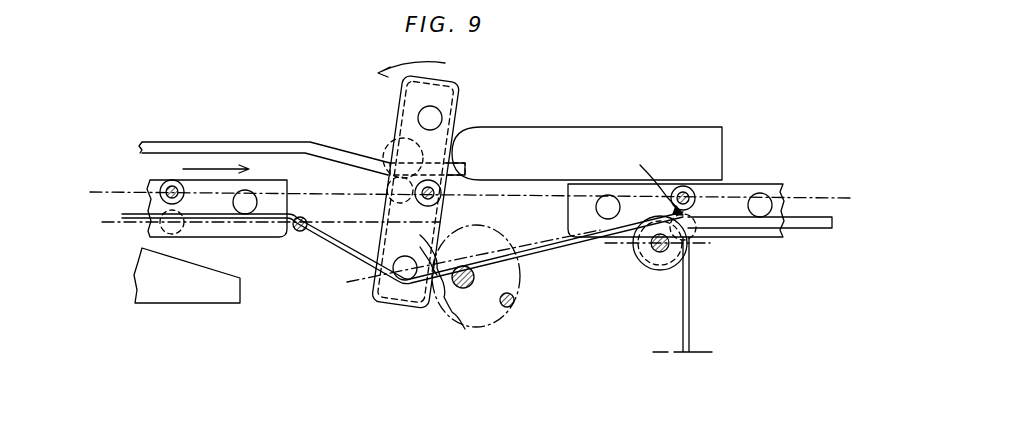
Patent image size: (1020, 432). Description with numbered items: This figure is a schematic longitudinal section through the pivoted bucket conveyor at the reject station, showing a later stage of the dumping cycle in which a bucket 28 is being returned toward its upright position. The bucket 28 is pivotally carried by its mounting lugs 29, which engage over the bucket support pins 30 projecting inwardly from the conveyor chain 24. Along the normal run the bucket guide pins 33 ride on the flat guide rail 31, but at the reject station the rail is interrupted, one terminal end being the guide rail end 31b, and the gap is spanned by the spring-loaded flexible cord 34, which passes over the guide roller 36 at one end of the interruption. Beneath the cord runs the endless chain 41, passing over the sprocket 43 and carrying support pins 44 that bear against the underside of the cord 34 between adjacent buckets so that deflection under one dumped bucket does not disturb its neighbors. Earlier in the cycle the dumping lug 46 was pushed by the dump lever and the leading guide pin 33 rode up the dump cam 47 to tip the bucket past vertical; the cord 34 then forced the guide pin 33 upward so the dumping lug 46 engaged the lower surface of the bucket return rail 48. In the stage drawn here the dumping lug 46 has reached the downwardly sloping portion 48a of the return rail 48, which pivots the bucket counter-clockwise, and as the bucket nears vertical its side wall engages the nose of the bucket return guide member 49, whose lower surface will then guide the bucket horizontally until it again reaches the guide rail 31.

The conveyor chain 24 is at (815, 198).
The bucket 28 is at (148, 181).
The mounting lug 29 is at (441, 192).
The bucket support pin 30 is at (167, 196).
The guide rail 31 is at (817, 230).
The guide rail end 31b is at (647, 161).
The bucket guide pin 33 is at (427, 117).
The flexible cord 34 is at (392, 303).
The guide roller 36 is at (650, 258).
The endless chain 41 is at (122, 225).
The sprocket 43 is at (448, 318).
The support pin 44 is at (300, 232).
The dumping lug 46 is at (190, 230).
The dump cam 47 is at (208, 298).
The bucket return rail 48 is at (256, 122).
The downwardly sloping portion 48a is at (358, 168).
The bucket return guide member 49 is at (578, 127).